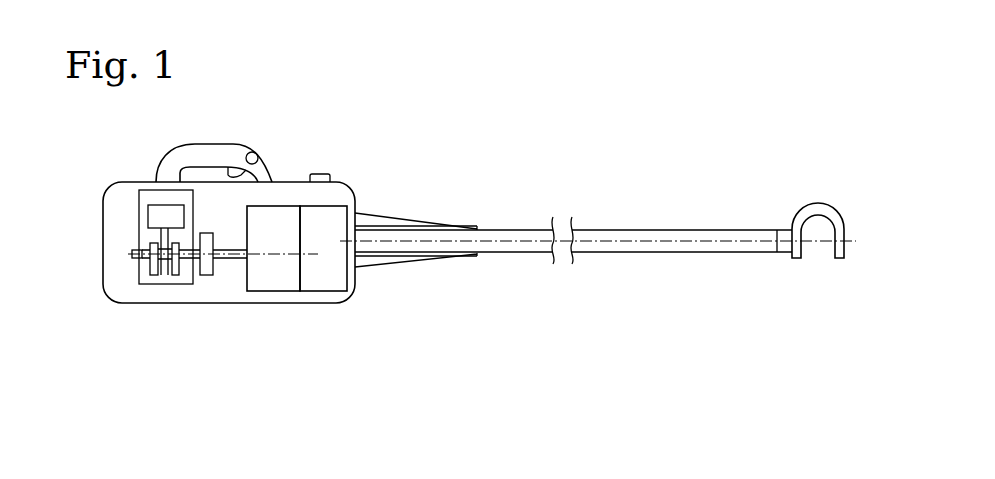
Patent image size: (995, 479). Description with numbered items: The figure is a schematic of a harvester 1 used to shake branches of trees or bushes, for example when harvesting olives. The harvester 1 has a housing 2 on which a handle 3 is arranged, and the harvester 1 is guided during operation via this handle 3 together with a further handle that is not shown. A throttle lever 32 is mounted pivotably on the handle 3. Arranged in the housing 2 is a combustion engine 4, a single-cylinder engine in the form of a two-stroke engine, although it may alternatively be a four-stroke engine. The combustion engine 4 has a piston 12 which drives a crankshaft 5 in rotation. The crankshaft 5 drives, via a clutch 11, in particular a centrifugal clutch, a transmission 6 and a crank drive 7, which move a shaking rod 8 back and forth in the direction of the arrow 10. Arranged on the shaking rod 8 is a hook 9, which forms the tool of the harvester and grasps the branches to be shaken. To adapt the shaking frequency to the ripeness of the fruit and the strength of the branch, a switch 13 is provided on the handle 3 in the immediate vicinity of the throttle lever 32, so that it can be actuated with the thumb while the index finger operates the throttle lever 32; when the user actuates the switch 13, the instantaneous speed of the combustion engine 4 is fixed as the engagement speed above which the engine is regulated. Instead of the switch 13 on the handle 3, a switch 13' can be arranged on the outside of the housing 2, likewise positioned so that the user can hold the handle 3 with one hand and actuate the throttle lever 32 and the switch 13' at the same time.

The harvester 1 is at (620, 159).
The housing 2 is at (347, 180).
The handle 3 is at (202, 152).
The combustion engine 4 is at (144, 283).
The crankshaft 5 is at (143, 256).
The transmission 6 is at (267, 220).
The crank drive 7 is at (325, 273).
The shaking rod 8 is at (656, 244).
The hook 9 is at (818, 208).
The arrow 10 is at (502, 216).
The clutch 11 is at (205, 275).
The piston 12 is at (152, 213).
The switch 13 is at (264, 120).
The switch 13' is at (333, 139).
The throttle lever 32 is at (233, 164).